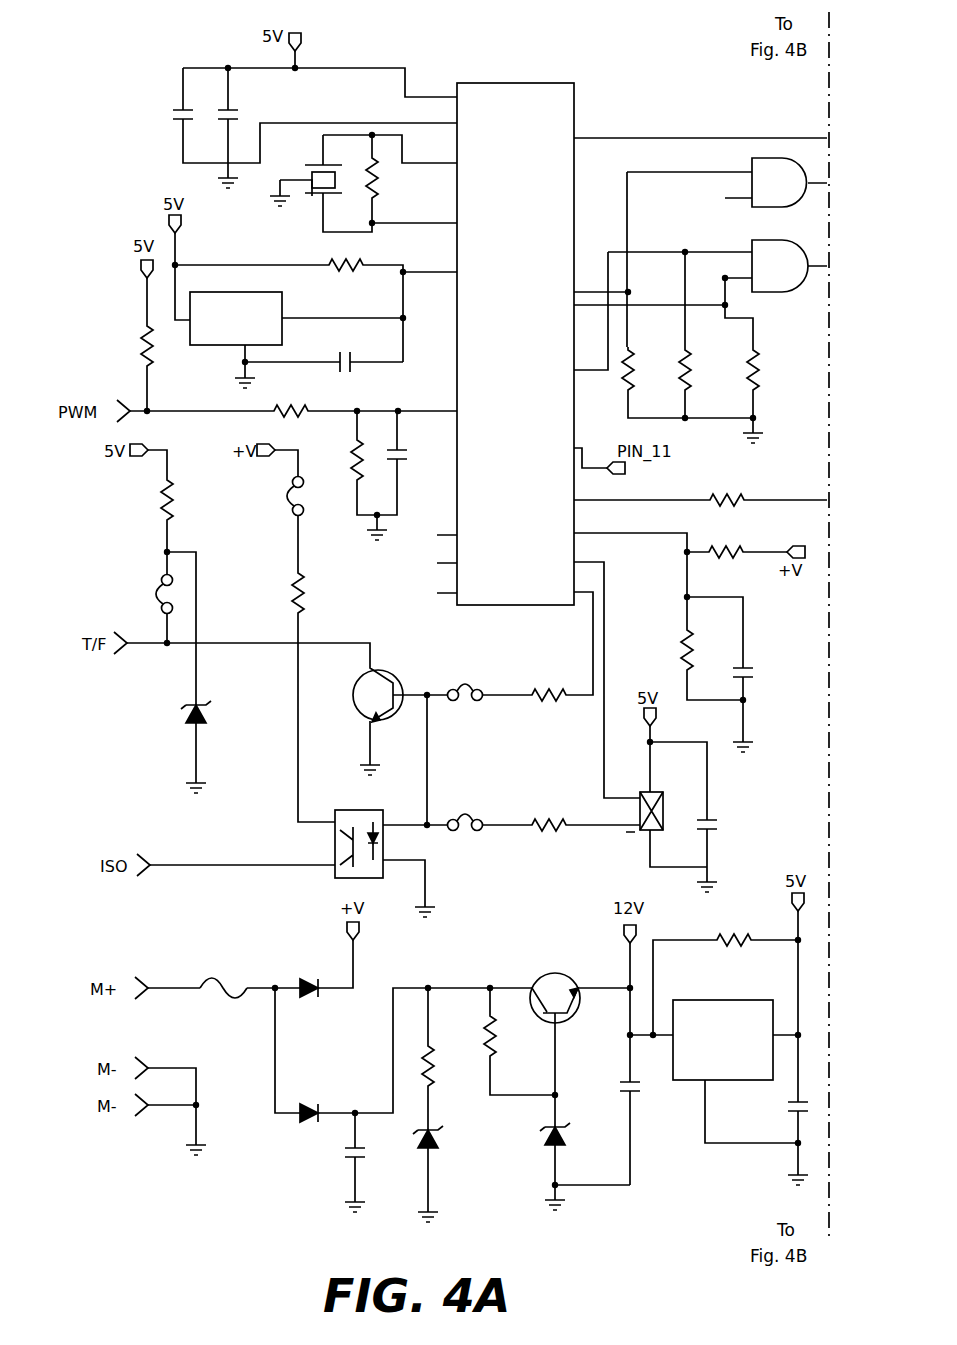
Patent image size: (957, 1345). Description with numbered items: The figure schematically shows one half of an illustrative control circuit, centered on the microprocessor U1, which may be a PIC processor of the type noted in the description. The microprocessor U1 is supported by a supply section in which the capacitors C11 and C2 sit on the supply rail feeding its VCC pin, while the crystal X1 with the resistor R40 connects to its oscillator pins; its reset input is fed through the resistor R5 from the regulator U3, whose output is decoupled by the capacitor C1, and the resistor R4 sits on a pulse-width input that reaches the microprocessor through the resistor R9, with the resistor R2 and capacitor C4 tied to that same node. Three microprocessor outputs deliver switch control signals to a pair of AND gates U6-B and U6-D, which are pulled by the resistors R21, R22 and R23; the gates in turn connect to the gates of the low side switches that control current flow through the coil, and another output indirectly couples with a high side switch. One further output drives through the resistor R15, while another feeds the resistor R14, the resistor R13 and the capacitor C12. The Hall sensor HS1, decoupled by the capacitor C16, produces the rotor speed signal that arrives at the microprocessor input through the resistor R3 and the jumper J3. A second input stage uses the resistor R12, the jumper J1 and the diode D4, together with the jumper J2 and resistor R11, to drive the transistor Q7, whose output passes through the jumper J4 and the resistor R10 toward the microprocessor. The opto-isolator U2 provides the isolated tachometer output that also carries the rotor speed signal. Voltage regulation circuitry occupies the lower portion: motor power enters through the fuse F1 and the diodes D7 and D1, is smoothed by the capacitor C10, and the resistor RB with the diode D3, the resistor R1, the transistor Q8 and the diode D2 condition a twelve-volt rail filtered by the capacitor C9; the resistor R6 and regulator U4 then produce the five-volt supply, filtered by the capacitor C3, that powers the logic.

The microprocessor U1 is at (508, 314).
The capacitor C11 is at (195, 106).
The capacitor C2 is at (237, 106).
The crystal X1 is at (315, 175).
The resistor R40 is at (387, 180).
The resistor R5 is at (346, 254).
The voltage regulator U3 is at (238, 318).
The capacitor C1 is at (348, 349).
The resistor R4 is at (134, 347).
The resistor R9 is at (291, 400).
The resistor R2 is at (345, 462).
The capacitor C4 is at (407, 459).
The AND gate U6-B is at (778, 193).
The AND gate U6-D is at (779, 275).
The resistor R21 is at (640, 372).
The resistor R22 is at (698, 372).
The resistor R23 is at (766, 372).
The resistor R15 is at (727, 488).
The resistor R14 is at (726, 540).
The resistor R13 is at (700, 653).
The capacitor C12 is at (758, 665).
The hall sensor HS1 is at (654, 805).
The capacitor C16 is at (723, 824).
The resistor R12 is at (149, 500).
The jumper J1 is at (150, 597).
The diode D4 is at (180, 716).
The jumper J2 is at (282, 497).
The resistor R11 is at (276, 593).
The transistor Q7 is at (371, 695).
The jumper J4 is at (462, 679).
The resistor R10 is at (545, 679).
The jumper J3 is at (462, 809).
The resistor R3 is at (547, 809).
The opto-isolator U2 is at (357, 833).
The fuse F1 is at (223, 972).
The diode D7 is at (308, 973).
The diode D1 is at (308, 1097).
The capacitor C10 is at (335, 1156).
The resistor RB is at (434, 1062).
The diode D3 is at (415, 1146).
The resistor R1 is at (498, 1042).
The transistor Q8 is at (554, 995).
The diode D2 is at (542, 1139).
The capacitor C9 is at (614, 1090).
The resistor R6 is at (733, 927).
The voltage regulator LM78L05ACM U4 is at (723, 1035).
The capacitor C3 is at (811, 1108).